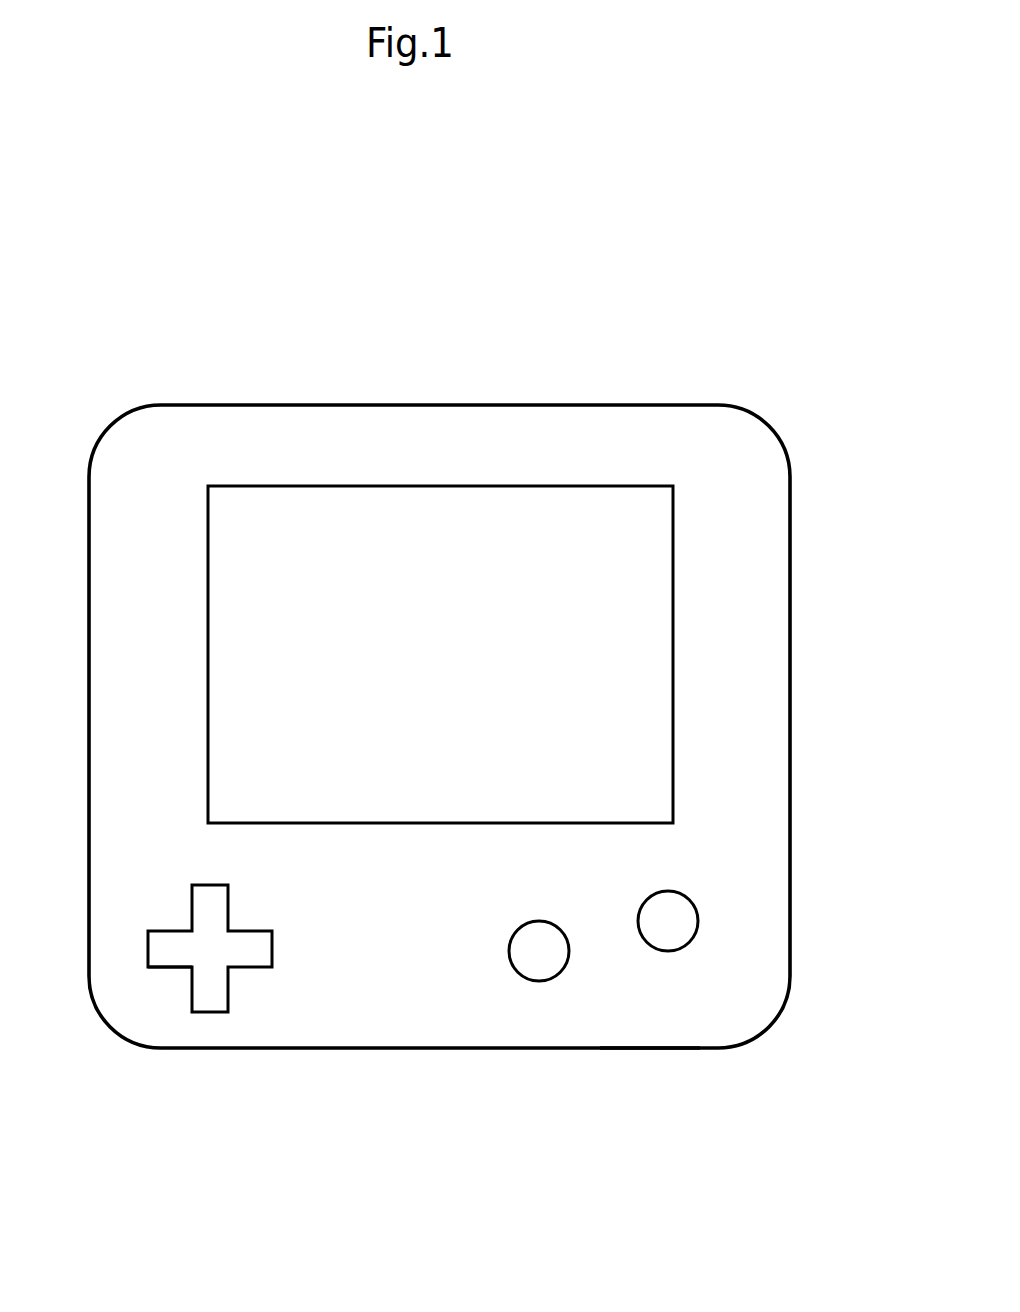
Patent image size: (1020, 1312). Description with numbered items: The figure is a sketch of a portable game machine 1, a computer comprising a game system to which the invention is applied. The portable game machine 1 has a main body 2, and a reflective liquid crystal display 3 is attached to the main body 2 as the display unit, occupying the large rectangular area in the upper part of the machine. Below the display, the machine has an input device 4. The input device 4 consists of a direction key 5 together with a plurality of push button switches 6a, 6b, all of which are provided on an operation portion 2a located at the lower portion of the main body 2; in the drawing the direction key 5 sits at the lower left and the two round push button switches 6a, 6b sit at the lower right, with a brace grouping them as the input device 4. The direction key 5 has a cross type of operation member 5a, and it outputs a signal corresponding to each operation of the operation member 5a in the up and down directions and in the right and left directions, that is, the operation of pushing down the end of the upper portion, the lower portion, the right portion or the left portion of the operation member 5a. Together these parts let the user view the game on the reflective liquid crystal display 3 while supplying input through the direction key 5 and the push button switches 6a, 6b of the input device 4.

The portable game machine 1 is at (258, 1050).
The main body 2 is at (185, 405).
The operation portion 2a is at (768, 925).
The reflective liquid crystal display 3 is at (653, 530).
The input device 4 is at (745, 1108).
The direction key 5 is at (275, 945).
The operation member 5a is at (160, 968).
The push button switch 6a is at (660, 955).
The push button switch 6b is at (537, 982).